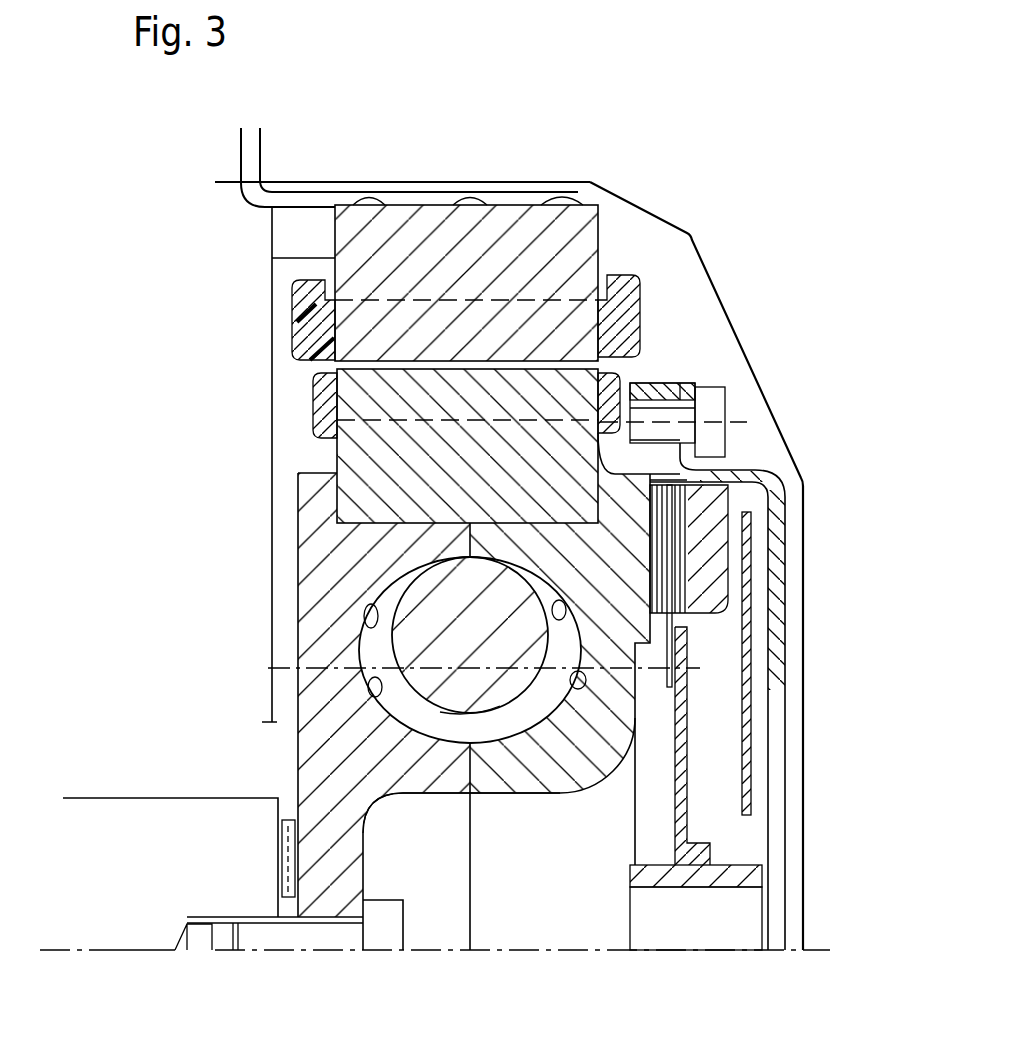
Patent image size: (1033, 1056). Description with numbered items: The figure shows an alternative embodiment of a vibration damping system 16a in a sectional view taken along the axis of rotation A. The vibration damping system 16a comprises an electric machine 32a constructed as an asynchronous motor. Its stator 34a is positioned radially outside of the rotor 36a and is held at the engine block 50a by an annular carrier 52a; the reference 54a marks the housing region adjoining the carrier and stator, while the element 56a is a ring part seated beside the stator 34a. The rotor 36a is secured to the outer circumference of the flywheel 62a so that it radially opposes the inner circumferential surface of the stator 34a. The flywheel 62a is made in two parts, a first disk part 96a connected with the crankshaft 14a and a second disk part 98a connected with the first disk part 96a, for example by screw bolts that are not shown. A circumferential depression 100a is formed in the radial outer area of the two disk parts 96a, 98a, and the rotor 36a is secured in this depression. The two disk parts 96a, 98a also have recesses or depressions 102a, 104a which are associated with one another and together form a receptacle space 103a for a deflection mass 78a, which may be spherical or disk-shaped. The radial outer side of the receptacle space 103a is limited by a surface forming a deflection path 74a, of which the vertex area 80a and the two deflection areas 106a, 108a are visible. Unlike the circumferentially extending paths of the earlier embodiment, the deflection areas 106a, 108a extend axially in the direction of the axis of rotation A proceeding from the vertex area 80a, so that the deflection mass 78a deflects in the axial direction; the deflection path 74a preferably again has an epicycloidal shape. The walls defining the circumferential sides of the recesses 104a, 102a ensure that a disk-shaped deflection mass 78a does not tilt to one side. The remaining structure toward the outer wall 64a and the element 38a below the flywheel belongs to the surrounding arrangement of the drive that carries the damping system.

The vibration damping system 16a is at (603, 126).
The annular carrier 52a is at (453, 186).
The housing 54a is at (598, 222).
The stator 34a is at (634, 250).
The stop ring 56a is at (632, 283).
The electric machine 32a is at (670, 344).
The engine block 50a is at (272, 385).
The rotor 36a is at (337, 447).
The circumferential depression 100a is at (452, 518).
The vertex area 80a is at (465, 555).
The deflection area 106a is at (366, 622).
The deflection path 74a is at (377, 684).
The recess 104a is at (563, 681).
The crankshaft 14a is at (180, 796).
The deflection mass 78a is at (510, 592).
The deflection area 108a is at (577, 626).
The housing wall 64a is at (803, 639).
The receptacle space 103a is at (450, 722).
The recess 102a is at (413, 714).
The first disk part 96a is at (422, 808).
The second disk part 98a is at (508, 795).
The spring stack and stem 38a is at (553, 818).
The flywheel 62a is at (683, 889).
The axis of rotation A is at (88, 950).